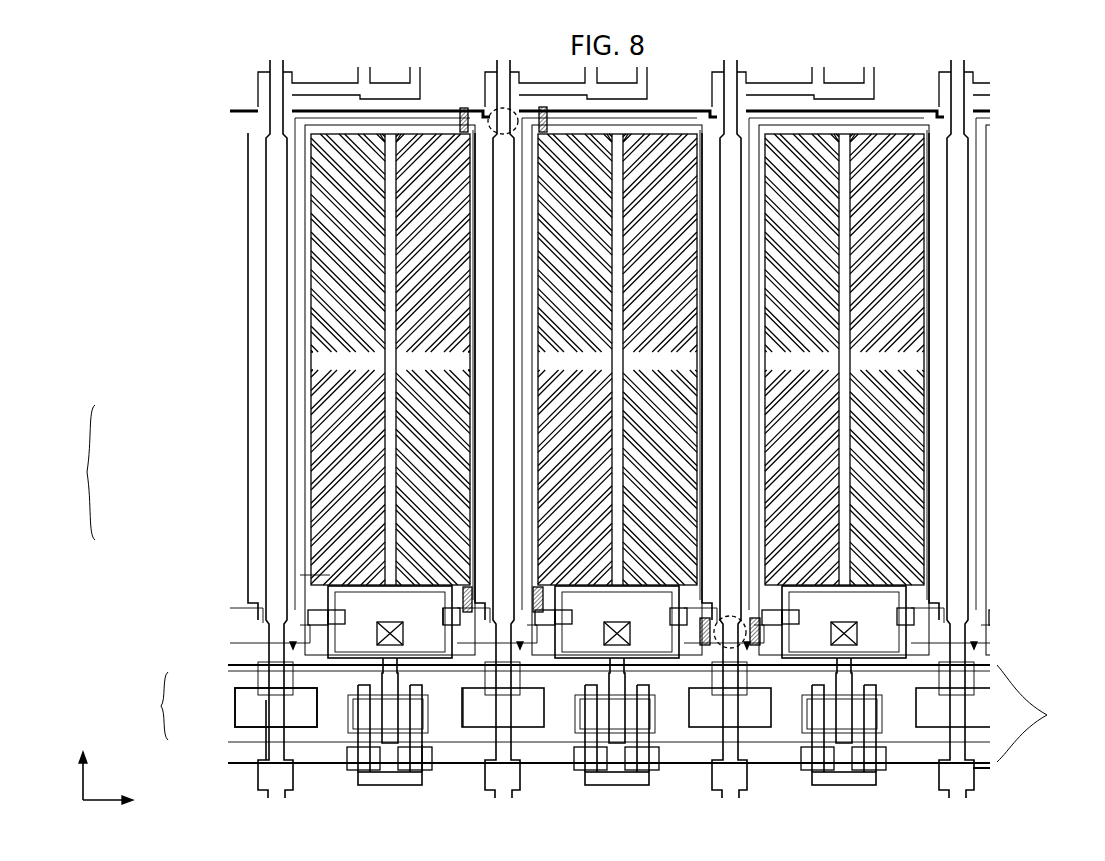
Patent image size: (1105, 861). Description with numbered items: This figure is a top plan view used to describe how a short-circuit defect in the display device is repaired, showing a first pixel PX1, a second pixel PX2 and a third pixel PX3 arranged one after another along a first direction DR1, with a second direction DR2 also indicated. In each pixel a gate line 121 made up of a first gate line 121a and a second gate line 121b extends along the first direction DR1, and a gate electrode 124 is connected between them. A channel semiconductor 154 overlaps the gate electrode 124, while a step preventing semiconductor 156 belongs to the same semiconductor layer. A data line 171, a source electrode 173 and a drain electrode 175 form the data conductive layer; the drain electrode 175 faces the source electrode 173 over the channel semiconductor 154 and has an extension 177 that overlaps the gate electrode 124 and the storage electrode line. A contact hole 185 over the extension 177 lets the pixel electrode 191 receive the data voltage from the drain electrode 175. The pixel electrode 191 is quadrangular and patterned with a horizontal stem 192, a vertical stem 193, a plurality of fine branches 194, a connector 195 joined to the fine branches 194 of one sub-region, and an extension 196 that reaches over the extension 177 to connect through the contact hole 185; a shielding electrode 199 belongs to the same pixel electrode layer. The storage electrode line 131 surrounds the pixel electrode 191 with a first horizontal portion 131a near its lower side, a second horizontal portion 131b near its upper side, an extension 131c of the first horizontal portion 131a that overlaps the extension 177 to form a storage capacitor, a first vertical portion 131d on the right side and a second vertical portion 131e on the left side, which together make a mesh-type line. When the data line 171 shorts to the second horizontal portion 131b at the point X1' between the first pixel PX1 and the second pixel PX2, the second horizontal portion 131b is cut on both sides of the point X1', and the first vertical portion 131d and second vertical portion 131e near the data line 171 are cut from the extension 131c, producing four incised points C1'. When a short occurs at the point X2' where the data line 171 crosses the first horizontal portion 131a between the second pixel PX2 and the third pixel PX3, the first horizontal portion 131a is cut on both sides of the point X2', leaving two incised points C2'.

The gate line 121 is at (224, 701).
The first gate line 121a is at (240, 684).
The second gate line 121b is at (240, 732).
The gate electrode 124 is at (483, 700).
The storage electrode line 131 is at (98, 474).
The first horizontal portion 131a is at (235, 625).
The second horizontal portion 131b is at (248, 137).
The extension 131c is at (320, 578).
The first vertical portion 131d is at (473, 410).
The second vertical portion 131e is at (295, 190).
The channel semiconductor 154 is at (347, 718).
The step preventing semiconductor 156 is at (266, 700).
The data line 171 is at (266, 237).
The source electrode 173 is at (350, 758).
The drain electrode 175 is at (396, 735).
The extension 177 is at (441, 700).
The contact hole 185 is at (385, 622).
The pixel electrode 191 is at (303, 130).
The horizontal stem 192 is at (311, 361).
The vertical stem 193 is at (388, 320).
The fine branches 194 is at (312, 290).
The connector 195 is at (310, 600).
The extension 196 is at (460, 640).
The shielding electrode 199 is at (655, 714).
The first pixel PX1 is at (333, 105).
The second pixel PX2 is at (673, 105).
The third pixel PX3 is at (898, 105).
The incised points C1' is at (516, 441).
The incised points C2' is at (717, 727).
The short-circuited point X1' is at (504, 82).
The short-circuited point X2' is at (717, 726).
The first direction DR1 is at (128, 800).
The second direction DR2 is at (84, 759).